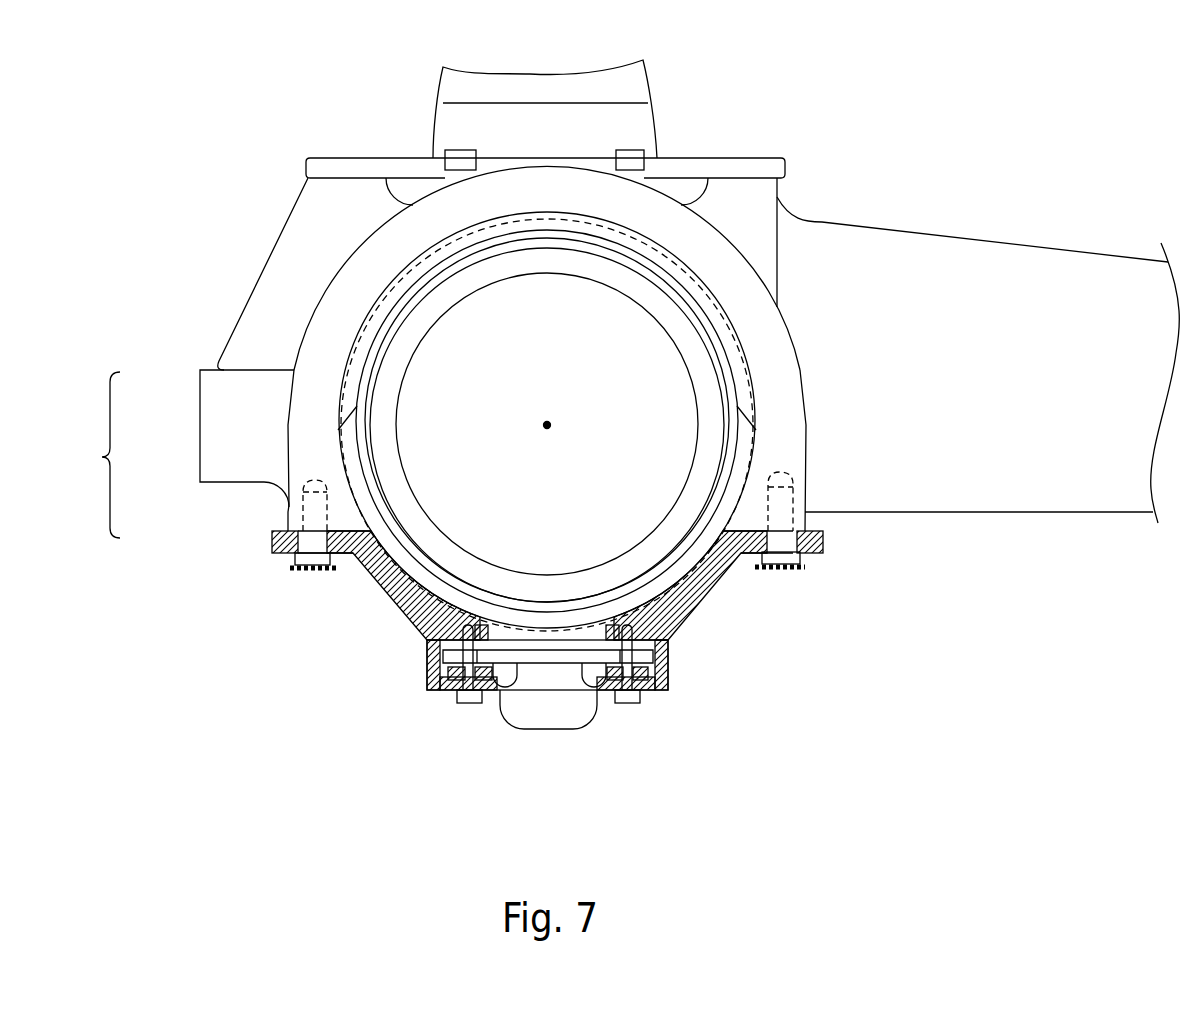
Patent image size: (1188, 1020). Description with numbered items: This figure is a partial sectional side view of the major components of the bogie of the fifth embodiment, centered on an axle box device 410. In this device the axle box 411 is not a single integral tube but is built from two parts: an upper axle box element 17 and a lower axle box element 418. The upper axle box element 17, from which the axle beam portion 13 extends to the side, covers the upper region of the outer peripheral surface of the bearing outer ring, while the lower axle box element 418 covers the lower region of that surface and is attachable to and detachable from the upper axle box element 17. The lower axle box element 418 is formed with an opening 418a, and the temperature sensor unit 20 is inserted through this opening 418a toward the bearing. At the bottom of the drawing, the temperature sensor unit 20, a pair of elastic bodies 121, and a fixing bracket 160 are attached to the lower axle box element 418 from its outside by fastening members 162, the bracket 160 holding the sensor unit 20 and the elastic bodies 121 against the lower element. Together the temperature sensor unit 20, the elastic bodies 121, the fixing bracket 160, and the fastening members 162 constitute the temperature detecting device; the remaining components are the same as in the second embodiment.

The axle box device 410 is at (191, 117).
The axle beam portion 13 is at (1114, 269).
The upper axle box element 17 is at (203, 385).
The axle box 411 is at (93, 455).
The lower axle box element 418 is at (270, 547).
The opening 418a is at (427, 637).
The fixing bracket 160 is at (668, 653).
The elastic bodies 121 is at (440, 690).
The fastening members 162 is at (468, 707).
The temperature sensor unit 20 is at (558, 732).